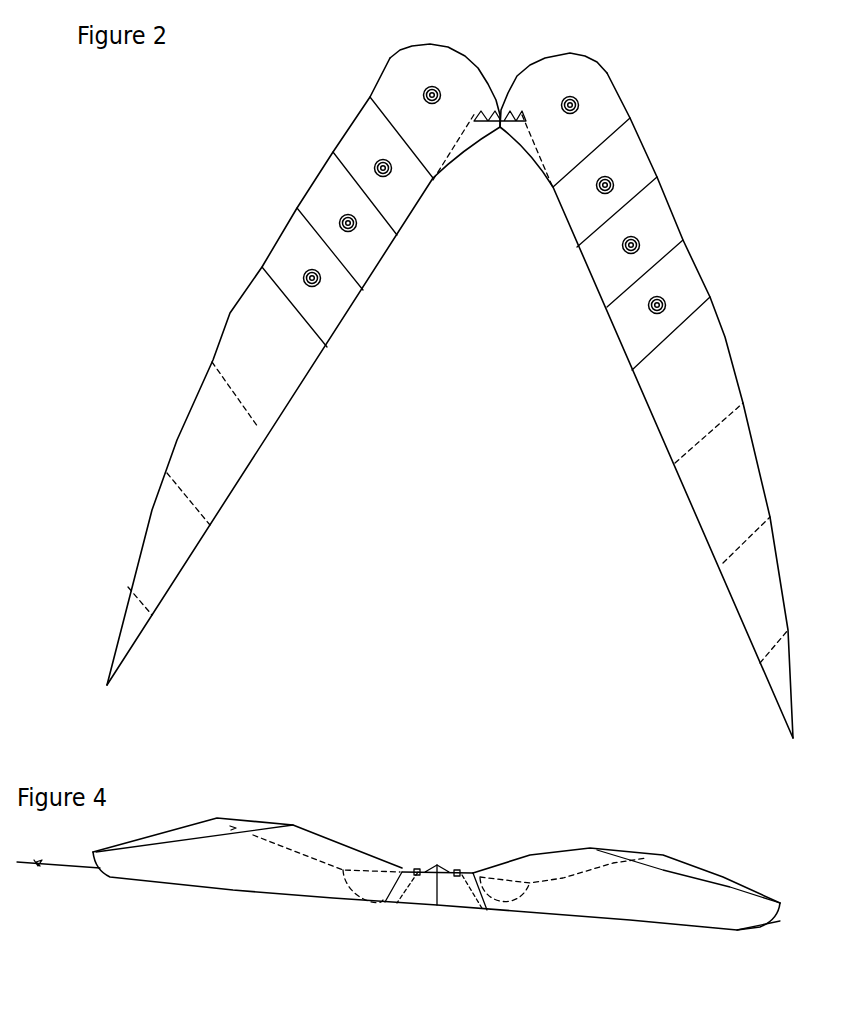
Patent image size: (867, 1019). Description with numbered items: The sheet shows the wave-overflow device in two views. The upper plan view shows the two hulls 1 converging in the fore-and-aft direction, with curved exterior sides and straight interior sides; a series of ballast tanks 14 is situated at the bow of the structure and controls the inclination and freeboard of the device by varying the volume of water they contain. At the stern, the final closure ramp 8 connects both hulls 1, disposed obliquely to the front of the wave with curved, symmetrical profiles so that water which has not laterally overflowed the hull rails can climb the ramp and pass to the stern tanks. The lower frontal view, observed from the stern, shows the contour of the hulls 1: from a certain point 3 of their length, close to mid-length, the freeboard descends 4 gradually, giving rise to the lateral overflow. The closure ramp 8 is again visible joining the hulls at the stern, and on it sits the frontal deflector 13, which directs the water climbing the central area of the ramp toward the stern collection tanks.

In FIG. 2, the hulls 1 is at (450, 391).
In FIG. 2, the final closure ramp 8 is at (477, 133).
In FIG. 4, the final closure ramp 8 is at (448, 895).
In FIG. 2, the ballast tanks 14 is at (243, 313).
In FIG. 4, the certain point 3 is at (293, 825).
In FIG. 4, the descending freeboard 4 is at (352, 847).
In FIG. 4, the frontal deflector 13 is at (445, 873).